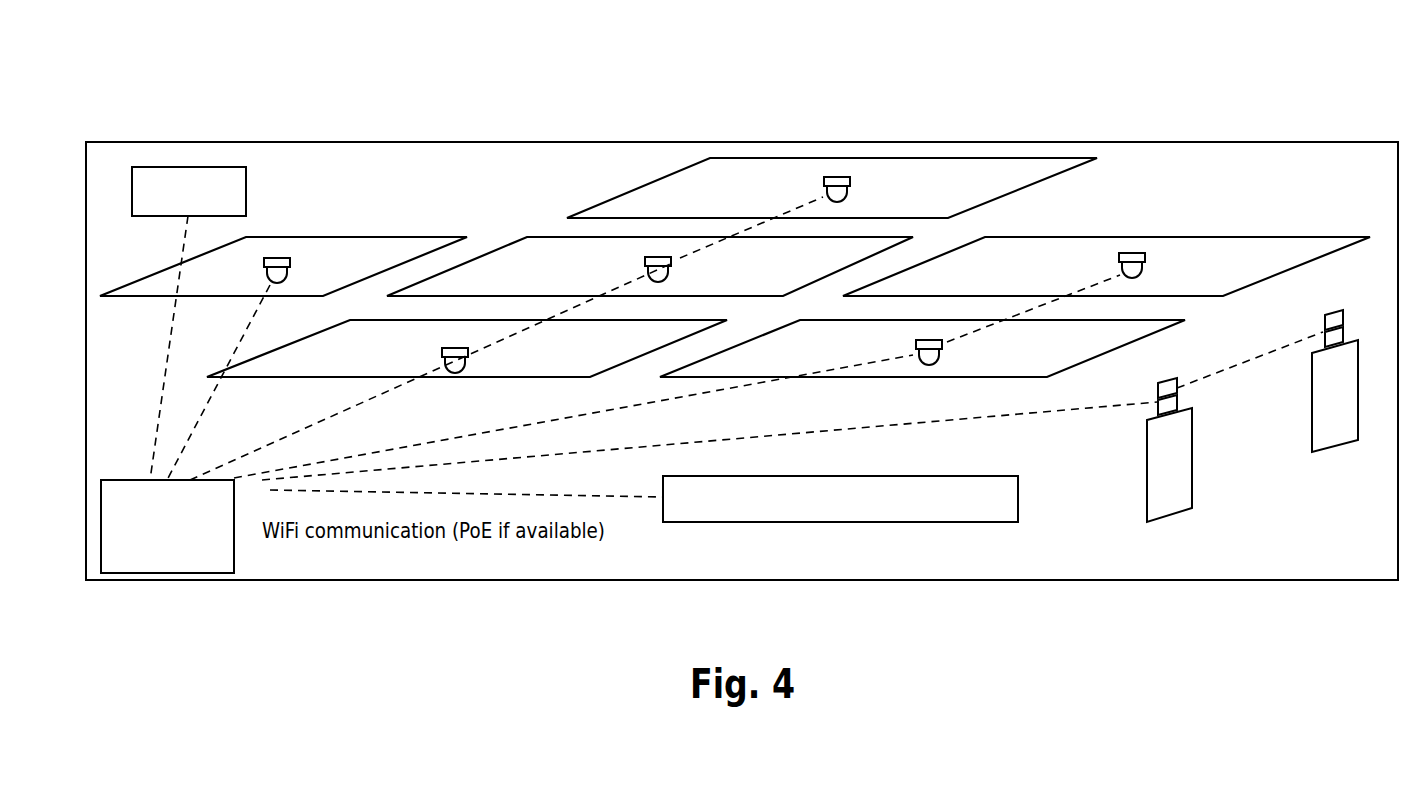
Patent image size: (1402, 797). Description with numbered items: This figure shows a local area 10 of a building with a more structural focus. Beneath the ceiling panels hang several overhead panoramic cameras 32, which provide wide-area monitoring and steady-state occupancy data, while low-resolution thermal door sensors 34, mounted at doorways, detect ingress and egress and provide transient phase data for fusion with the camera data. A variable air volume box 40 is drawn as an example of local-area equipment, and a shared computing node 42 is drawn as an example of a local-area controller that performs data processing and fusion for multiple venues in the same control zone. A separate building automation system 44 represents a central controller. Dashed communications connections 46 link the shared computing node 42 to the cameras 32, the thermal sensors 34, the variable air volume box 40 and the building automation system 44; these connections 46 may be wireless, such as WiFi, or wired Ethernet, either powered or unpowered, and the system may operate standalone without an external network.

The local area 10 is at (402, 76).
The panoramic camera 32 is at (658, 257).
The thermal sensor 34 is at (1167, 380).
The variable air volume (VAV) box 40 is at (180, 167).
The shared computing node (SCN) 42 is at (152, 573).
The building automation system (BAS) 44 is at (940, 523).
The communications connections 46 is at (165, 342).